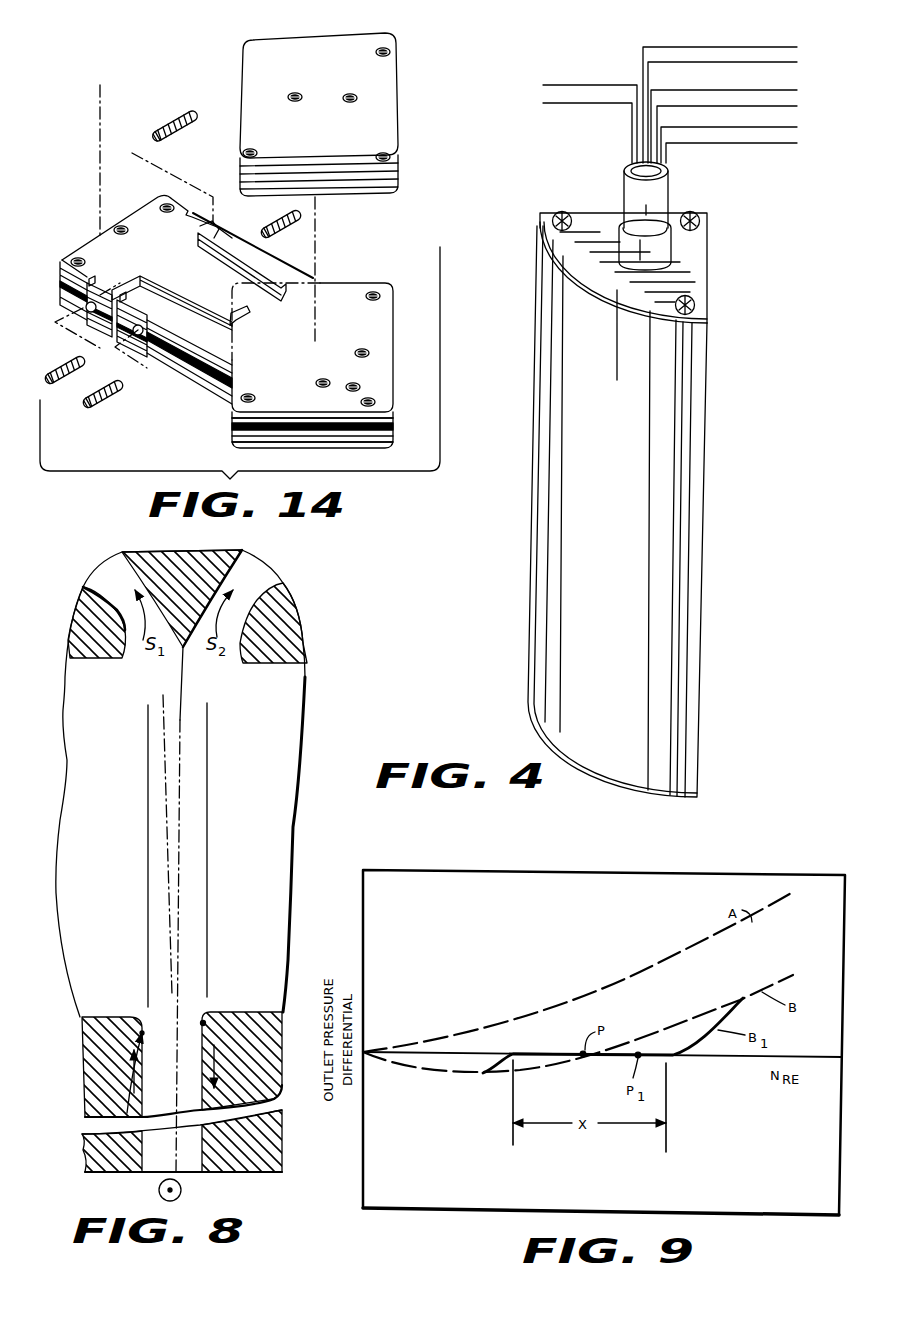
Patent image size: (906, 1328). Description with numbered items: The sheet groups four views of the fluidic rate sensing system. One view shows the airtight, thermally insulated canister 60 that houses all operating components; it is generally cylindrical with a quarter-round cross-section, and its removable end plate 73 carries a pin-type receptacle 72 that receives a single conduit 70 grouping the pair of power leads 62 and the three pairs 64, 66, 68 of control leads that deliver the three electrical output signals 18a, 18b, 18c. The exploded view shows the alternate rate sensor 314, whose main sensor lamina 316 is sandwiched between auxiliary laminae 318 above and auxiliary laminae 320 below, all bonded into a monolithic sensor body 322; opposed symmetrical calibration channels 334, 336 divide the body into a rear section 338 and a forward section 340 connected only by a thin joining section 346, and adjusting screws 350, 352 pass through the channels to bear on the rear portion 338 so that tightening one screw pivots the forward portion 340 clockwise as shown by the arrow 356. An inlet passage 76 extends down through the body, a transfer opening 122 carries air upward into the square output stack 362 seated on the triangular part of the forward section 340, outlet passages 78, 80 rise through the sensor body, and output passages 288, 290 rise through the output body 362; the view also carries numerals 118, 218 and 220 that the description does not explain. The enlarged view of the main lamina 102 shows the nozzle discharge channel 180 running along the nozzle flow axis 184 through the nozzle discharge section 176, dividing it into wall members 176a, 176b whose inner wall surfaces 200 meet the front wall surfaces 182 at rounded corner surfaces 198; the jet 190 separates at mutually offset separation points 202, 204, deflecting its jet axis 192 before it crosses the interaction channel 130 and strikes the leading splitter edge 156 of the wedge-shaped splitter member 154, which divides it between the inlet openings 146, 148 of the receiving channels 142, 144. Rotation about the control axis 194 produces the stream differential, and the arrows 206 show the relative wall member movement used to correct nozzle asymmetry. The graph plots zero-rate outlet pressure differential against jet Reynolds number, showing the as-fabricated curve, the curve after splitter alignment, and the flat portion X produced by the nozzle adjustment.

In FIG. 14, the output stack 362 is at (398, 120).
In FIG. 14, the output passage 288 is at (300, 93).
In FIG. 14, the output passage 290 is at (355, 94).
In FIG. 14, the screw holes 118 is at (388, 50).
In FIG. 14, the inlet passage 76 is at (125, 226).
In FIG. 14, the rear sensor body portion 338 is at (168, 260).
In FIG. 14, the main sensor lamina 316 is at (393, 430).
In FIG. 14, the control axis 194 is at (100, 88).
In FIG. 8, the control axis 194 is at (181, 1190).
In FIG. 14, the screw 220 is at (160, 124).
In FIG. 14, the adjusting screw 352 is at (268, 215).
In FIG. 14, the screw 218 is at (48, 366).
In FIG. 14, the adjusting screw 350 is at (112, 396).
In FIG. 14, the sensor body 322 is at (292, 262).
In FIG. 14, the calibration channel 334 is at (238, 264).
In FIG. 14, the calibration channel 336 is at (196, 315).
In FIG. 14, the joining section 346 is at (250, 308).
In FIG. 14, the forward sensor body portion 340 is at (283, 365).
In FIG. 14, the auxiliary laminae 318 is at (393, 414).
In FIG. 14, the auxiliary laminae 320 is at (393, 444).
In FIG. 14, the rate sensor 314 is at (396, 342).
In FIG. 14, the arrow 356 is at (318, 365).
In FIG. 14, the outlet passage 78 is at (365, 349).
In FIG. 14, the outlet passage 80 is at (322, 378).
In FIG. 14, the transfer opening 122 is at (360, 385).
In FIG. 4, the electrical output signal 18a is at (802, 42).
In FIG. 4, the electrical output signal 18b is at (802, 84).
In FIG. 4, the electrical output signal 18c is at (802, 122).
In FIG. 4, the power leads 62 is at (592, 100).
In FIG. 4, the control lead pair 64 is at (685, 50).
In FIG. 4, the control lead pair 66 is at (695, 92).
In FIG. 4, the control lead pair 68 is at (706, 135).
In FIG. 4, the conduit 70 is at (622, 188).
In FIG. 4, the pin-type receptacle 72 is at (672, 252).
In FIG. 4, the removable end plate 73 is at (693, 290).
In FIG. 4, the canister 60 is at (707, 400).
In FIG. 8, the interaction channel 130 is at (272, 844).
In FIG. 8, the receiving channel 142 is at (103, 575).
In FIG. 8, the receiving channel 144 is at (257, 577).
In FIG. 8, the splitter member 154 is at (196, 586).
In FIG. 8, the inlet opening 146 is at (172, 653).
In FIG. 8, the inlet opening 148 is at (197, 645).
In FIG. 8, the leading splitter edge 156 is at (177, 653).
In FIG. 8, the fluid jet 190 is at (207, 933).
In FIG. 8, the nozzle flow axis 184 is at (180, 781).
In FIG. 8, the jet axis 192 is at (167, 813).
In FIG. 8, the wall member 176a is at (88, 1055).
In FIG. 8, the wall member 176b is at (237, 1093).
In FIG. 8, the nozzle discharge channel 180 is at (102, 1142).
In FIG. 8, the nozzle discharge section 176 is at (283, 1150).
In FIG. 8, the inner wall surfaces 200 is at (200, 1073).
In FIG. 8, the exit end 182 is at (97, 1017).
In FIG. 8, the corner surfaces 198 is at (135, 1010).
In FIG. 8, the main lamina 102 is at (73, 1033).
In FIG. 8, the separation point 202 is at (117, 1072).
In FIG. 8, the arrows 206 is at (150, 1068).
In FIG. 8, the separation point 204 is at (239, 1040).